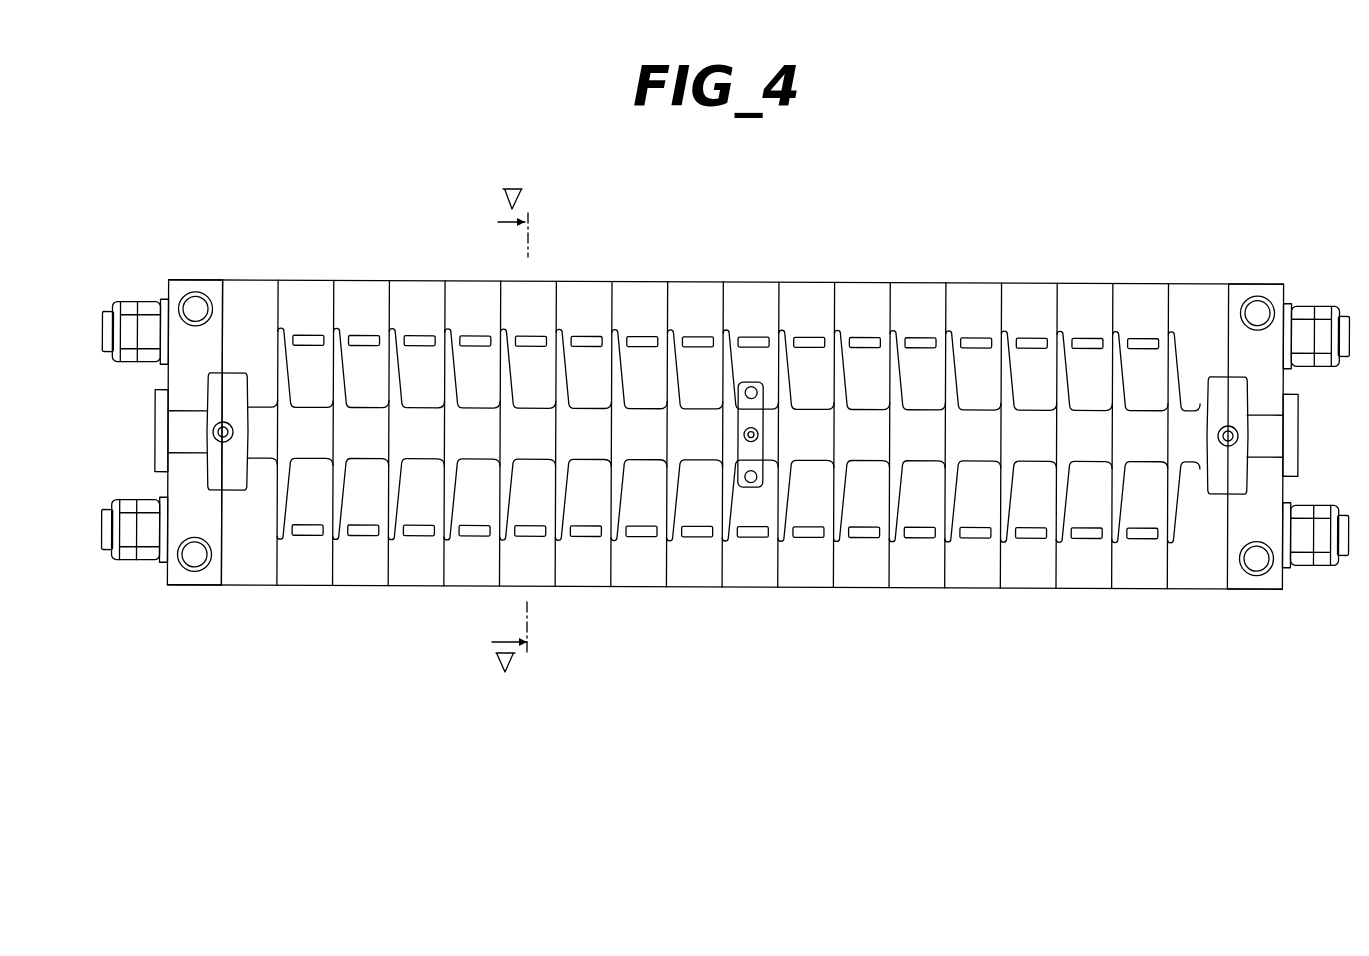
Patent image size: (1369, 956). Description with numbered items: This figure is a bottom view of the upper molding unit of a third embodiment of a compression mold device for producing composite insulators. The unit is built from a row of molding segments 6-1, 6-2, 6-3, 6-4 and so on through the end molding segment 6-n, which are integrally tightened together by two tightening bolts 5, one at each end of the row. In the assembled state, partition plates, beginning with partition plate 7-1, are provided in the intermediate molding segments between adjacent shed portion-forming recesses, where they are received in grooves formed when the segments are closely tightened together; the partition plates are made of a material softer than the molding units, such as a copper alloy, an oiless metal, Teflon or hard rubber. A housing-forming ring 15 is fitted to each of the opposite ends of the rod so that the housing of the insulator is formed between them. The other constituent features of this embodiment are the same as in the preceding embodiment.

The tightening bolt 5 is at (1330, 295).
The housing-forming ring 15 is at (225, 405).
The molding segment 6-1 is at (192, 582).
The molding segment 6-2 is at (258, 577).
The molding segment 6-3 is at (313, 580).
The molding segment 6-4 is at (362, 577).
The molding segment 6-n is at (1243, 584).
The partition plate 7-1 is at (305, 335).